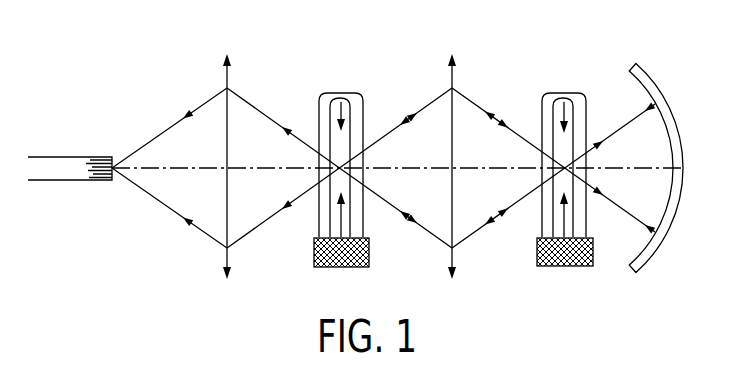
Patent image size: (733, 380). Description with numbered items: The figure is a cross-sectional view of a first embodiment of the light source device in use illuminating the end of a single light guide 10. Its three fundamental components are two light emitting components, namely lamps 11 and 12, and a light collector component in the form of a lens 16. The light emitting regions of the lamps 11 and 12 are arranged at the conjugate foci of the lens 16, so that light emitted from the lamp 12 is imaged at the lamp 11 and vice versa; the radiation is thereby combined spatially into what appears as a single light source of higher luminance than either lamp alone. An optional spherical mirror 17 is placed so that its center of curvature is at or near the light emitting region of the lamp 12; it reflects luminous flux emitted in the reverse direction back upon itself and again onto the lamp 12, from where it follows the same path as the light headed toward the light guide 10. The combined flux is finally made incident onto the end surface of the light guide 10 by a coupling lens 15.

The light guide 10 is at (57, 176).
The lamp 11 is at (345, 91).
The lamp 12 is at (568, 91).
The coupling lens 15 is at (227, 80).
The lens 16 is at (452, 80).
The spherical mirror 17 is at (646, 82).